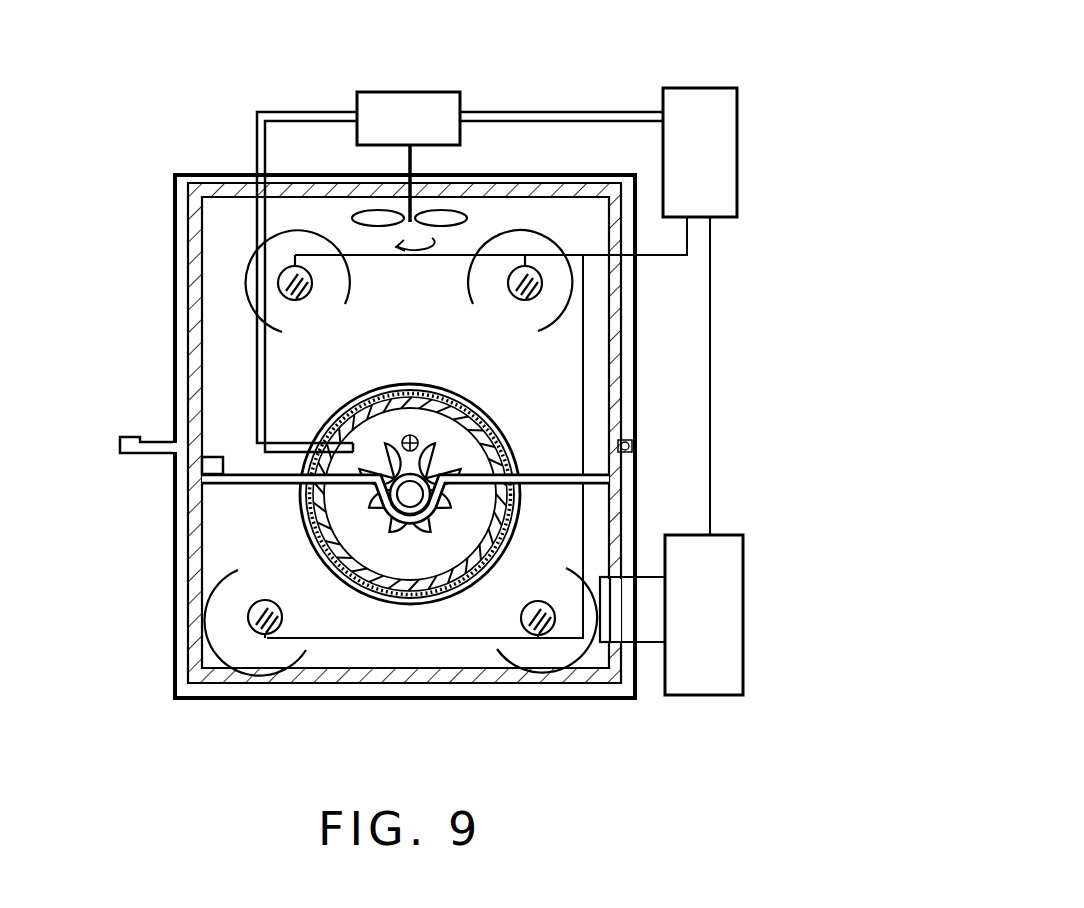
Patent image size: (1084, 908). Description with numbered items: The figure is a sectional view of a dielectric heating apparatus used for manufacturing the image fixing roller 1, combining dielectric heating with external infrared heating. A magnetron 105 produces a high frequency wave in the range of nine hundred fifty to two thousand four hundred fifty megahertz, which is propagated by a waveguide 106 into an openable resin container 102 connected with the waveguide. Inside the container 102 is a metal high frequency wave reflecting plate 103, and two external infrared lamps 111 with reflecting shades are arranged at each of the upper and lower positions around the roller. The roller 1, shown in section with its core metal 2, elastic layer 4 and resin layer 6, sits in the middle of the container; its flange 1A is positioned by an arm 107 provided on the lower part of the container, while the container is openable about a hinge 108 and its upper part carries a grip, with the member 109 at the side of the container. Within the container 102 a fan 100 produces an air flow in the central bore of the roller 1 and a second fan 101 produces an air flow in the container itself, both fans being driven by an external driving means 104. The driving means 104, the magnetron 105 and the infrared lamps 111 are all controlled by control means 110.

The image fixing roller 1 is at (408, 385).
The flange 1A is at (411, 517).
The core metal 2 is at (512, 522).
The elastic layer 4 is at (520, 458).
The resin layer 6 is at (510, 440).
The fan 100 is at (483, 417).
The fan 101 is at (377, 213).
The resin container 102 is at (578, 180).
The high frequency wave reflecting plate 103 is at (512, 192).
The driving means 104 is at (408, 92).
The magnetron 105 is at (745, 600).
The waveguide 106 is at (648, 650).
The arm 107 is at (260, 486).
The hinge 108 is at (682, 376).
The door handle 109 is at (125, 437).
The control means 110 is at (738, 160).
The external infrared lamp 111 is at (308, 296).